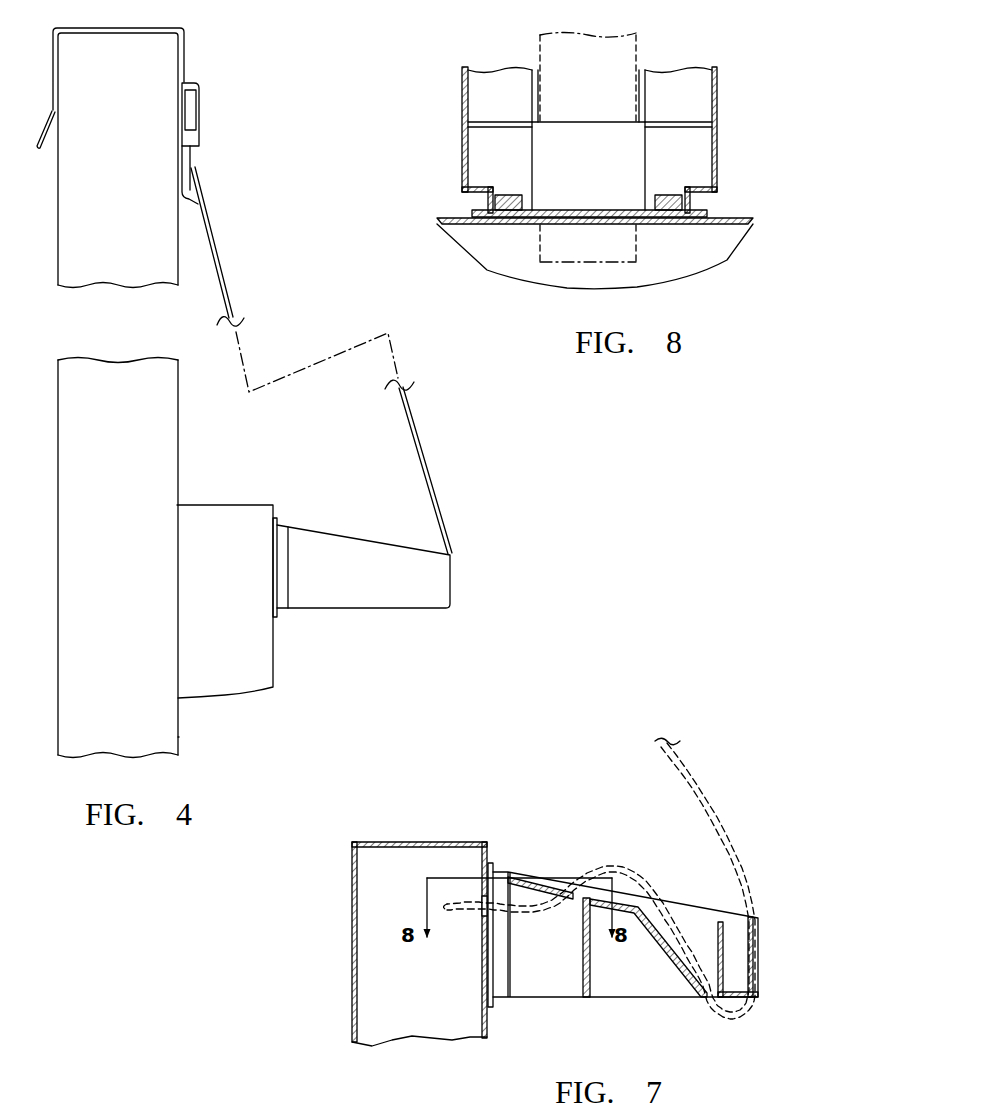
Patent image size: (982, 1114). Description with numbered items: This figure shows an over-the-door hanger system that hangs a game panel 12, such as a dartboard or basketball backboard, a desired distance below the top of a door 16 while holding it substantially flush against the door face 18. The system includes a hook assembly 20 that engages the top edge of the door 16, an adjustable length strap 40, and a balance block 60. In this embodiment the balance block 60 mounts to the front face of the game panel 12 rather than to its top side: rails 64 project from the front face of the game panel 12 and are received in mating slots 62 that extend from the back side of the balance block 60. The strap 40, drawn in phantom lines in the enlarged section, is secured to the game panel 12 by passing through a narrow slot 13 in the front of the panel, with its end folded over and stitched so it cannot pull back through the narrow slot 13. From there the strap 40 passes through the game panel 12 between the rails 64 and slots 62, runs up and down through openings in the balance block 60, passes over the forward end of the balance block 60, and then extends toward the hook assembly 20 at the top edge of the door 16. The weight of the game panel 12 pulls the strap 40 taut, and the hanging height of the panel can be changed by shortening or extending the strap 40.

In FIG. 4, the game panel 12 is at (275, 648).
In FIG. 8, the game panel 12 is at (440, 215).
In FIG. 7, the game panel 12 is at (351, 936).
In FIG. 7, the narrow slot 13 is at (478, 900).
In FIG. 4, the door 16 is at (79, 241).
In FIG. 4, the door face 18 is at (180, 737).
In FIG. 4, the hook assembly 20 is at (219, 122).
In FIG. 4, the adjustable length strap 40 is at (425, 441).
In FIG. 8, the adjustable length strap 40 is at (640, 46).
In FIG. 7, the adjustable length strap 40 is at (710, 781).
In FIG. 4, the balance block 60 is at (411, 612).
In FIG. 8, the balance block 60 is at (461, 108).
In FIG. 7, the balance block 60 is at (681, 886).
In FIG. 8, the slots 62 is at (688, 203).
In FIG. 8, the rails 64 is at (506, 192).